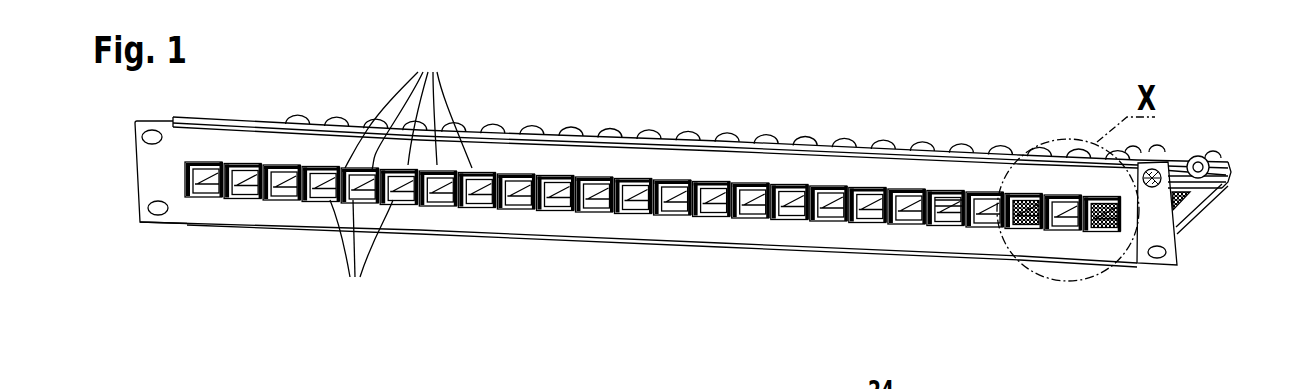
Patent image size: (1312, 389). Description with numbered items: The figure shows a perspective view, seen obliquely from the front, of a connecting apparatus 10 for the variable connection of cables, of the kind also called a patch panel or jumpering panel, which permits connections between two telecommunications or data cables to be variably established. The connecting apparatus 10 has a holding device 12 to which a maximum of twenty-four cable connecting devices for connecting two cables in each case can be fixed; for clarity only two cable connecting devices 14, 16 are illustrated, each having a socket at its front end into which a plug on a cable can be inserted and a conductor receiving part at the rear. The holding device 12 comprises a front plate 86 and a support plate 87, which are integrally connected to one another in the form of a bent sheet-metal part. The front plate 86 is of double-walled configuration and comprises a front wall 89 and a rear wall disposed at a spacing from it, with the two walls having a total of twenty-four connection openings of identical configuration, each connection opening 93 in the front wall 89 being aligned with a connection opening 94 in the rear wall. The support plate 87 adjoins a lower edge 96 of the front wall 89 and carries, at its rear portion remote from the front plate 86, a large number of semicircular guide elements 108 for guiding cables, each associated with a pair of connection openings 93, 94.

The connecting apparatus 10 is at (819, 104).
The holding device 12 is at (1190, 255).
The cable connecting device 14 is at (1010, 241).
The cable connecting device 16 is at (1092, 244).
The front plate 86 is at (126, 172).
The support plate 87 is at (1226, 208).
The front wall 89 is at (180, 210).
The connection opening 93 is at (361, 254).
The connection opening 94 is at (408, 107).
The lower edge 96 is at (703, 246).
The guide elements 108 is at (1213, 160).